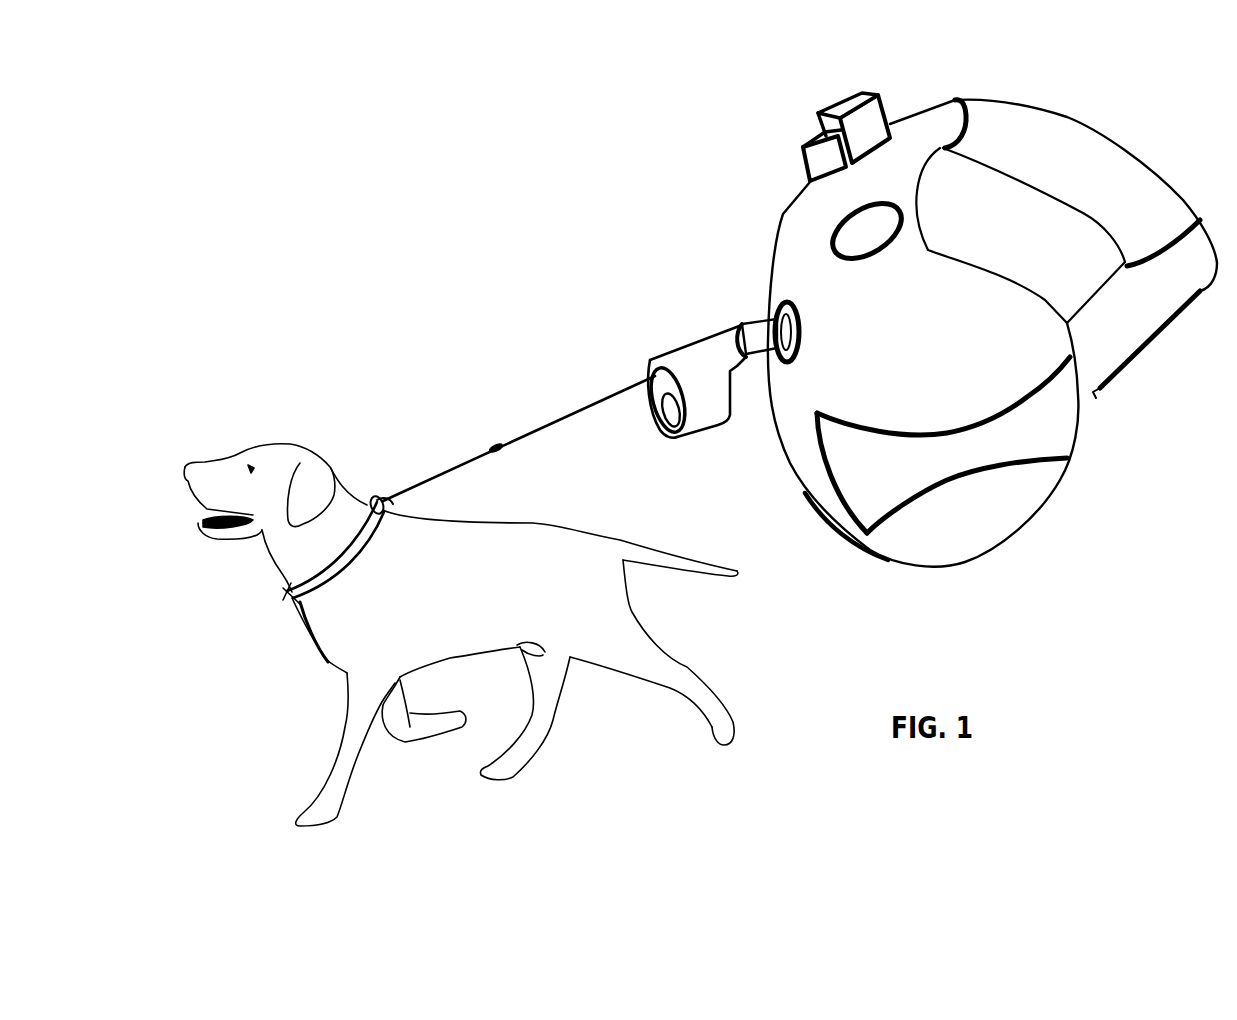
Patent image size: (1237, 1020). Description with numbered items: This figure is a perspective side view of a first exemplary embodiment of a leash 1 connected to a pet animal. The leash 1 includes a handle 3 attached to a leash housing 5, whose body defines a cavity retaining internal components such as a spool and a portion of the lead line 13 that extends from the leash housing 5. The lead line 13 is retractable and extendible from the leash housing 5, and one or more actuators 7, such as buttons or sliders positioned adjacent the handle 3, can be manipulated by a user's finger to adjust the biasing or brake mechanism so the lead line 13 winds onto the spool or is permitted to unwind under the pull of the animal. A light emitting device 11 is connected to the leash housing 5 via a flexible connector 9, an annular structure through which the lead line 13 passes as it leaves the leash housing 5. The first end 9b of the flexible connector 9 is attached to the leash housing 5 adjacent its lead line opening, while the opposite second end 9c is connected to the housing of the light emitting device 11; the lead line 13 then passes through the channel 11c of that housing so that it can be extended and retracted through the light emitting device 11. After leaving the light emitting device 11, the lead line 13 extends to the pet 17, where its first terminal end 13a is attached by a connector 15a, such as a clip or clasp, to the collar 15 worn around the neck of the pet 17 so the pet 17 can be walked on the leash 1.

The leash 1 is at (774, 138).
The handle 3 is at (1117, 144).
The leash housing 5 is at (840, 547).
The actuators 7 is at (875, 79).
The flexible connector 9 is at (748, 313).
The first end of the flexible connector 9b is at (770, 297).
The second end of the flexible connector 9c is at (733, 321).
The light emitting device 11 is at (709, 432).
The channel 11c is at (1146, 340).
The lead line 13 is at (507, 432).
The first terminal end 13a is at (379, 496).
The collar 15 is at (290, 592).
The connector 15a is at (400, 508).
The pet 17 is at (330, 670).